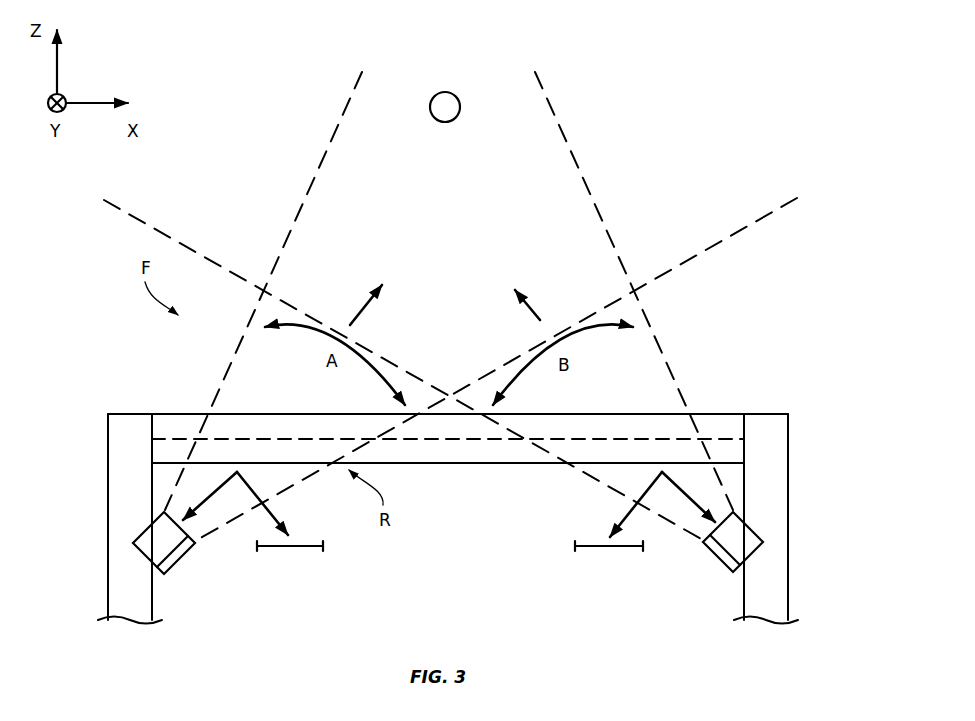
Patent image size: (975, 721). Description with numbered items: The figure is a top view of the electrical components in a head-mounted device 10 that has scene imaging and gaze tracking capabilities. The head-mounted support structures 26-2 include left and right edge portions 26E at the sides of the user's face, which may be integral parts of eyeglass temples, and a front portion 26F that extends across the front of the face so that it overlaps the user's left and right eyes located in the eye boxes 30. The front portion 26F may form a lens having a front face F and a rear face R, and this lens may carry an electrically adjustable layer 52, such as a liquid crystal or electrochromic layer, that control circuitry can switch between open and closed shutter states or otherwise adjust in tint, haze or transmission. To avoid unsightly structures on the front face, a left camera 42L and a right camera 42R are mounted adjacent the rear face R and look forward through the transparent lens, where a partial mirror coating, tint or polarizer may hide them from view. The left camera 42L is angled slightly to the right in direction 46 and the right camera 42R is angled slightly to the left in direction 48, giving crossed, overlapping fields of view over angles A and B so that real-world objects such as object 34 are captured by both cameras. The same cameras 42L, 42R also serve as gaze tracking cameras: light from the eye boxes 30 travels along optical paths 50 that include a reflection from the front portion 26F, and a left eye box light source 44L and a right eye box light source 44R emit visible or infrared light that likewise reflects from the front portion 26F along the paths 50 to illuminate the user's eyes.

The device 10 is at (815, 371).
The edge portions 26E is at (120, 481).
The front portion 26F is at (170, 427).
The support structures 26-2 is at (475, 484).
The eye boxes 30 is at (323, 546).
The object 34 is at (445, 113).
The left camera 42L is at (137, 565).
The right camera 42R is at (741, 548).
The left eye box light source 44L is at (178, 552).
The right eye box light source 44R is at (717, 552).
The direction 46 is at (365, 310).
The direction 48 is at (535, 315).
The optical paths 50 is at (260, 508).
The adjustable layer 52 is at (458, 440).